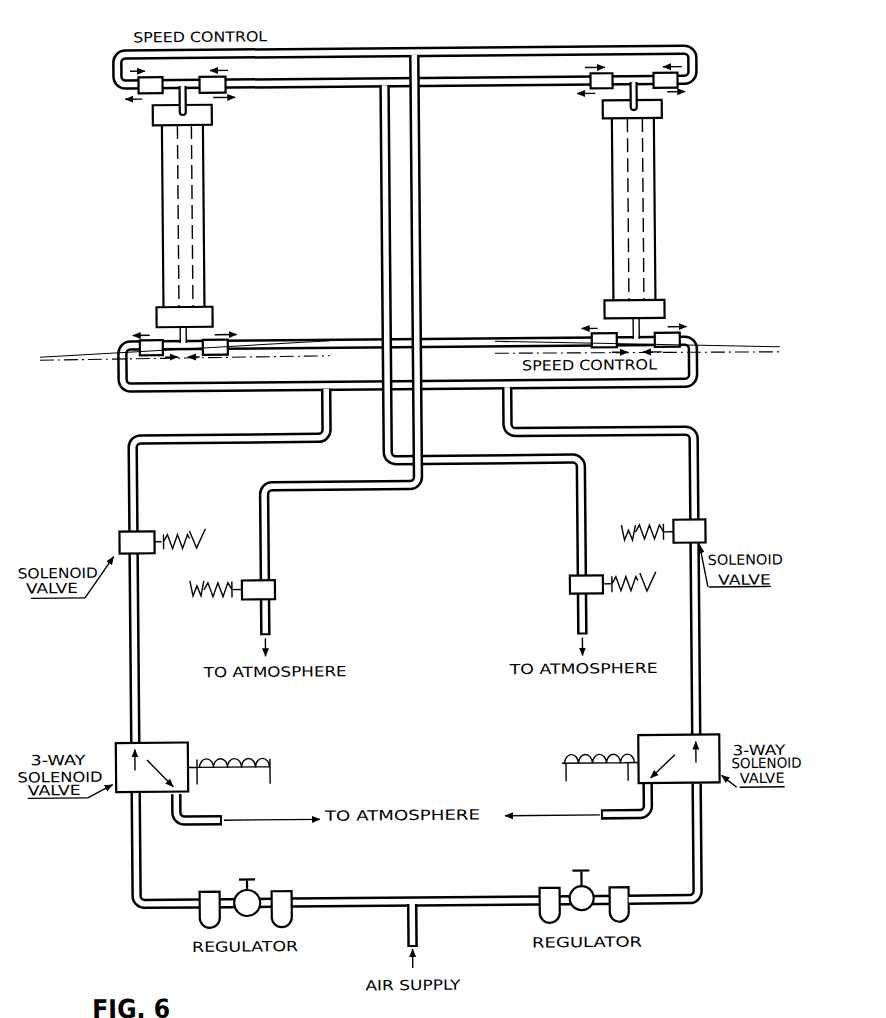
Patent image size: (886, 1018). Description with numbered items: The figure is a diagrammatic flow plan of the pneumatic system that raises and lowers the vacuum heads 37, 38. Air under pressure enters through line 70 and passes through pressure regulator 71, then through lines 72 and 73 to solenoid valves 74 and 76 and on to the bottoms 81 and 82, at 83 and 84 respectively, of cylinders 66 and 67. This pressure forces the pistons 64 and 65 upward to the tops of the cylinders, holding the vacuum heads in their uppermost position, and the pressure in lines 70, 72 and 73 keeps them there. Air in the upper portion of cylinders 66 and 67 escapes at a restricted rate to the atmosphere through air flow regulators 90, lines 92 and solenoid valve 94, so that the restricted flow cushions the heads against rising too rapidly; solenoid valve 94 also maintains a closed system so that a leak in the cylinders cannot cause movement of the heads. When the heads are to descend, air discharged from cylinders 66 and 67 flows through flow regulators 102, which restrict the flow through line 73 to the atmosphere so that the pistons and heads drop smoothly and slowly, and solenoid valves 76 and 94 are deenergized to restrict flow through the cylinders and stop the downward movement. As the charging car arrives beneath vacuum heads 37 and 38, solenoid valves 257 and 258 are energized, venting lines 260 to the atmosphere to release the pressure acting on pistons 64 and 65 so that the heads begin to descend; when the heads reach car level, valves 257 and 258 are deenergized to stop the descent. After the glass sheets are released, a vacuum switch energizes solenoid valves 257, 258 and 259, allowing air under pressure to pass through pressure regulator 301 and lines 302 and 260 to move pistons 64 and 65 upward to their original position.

The line 92 is at (431, 47).
The air flow regulator 90 is at (203, 78).
The cylinder 66 is at (207, 213).
The piston 64 is at (199, 249).
The bottom inlet of cylinder 66 83 is at (177, 315).
The bottom of cylinder 66 81 is at (215, 307).
The flow regulator 102 is at (141, 340).
The vacuum head 37 is at (306, 359).
The line 73 is at (146, 433).
The cylinder 67 is at (658, 212).
The piston 65 is at (645, 254).
The bottom inlet of cylinder 67 84 is at (636, 310).
The bottom of cylinder 67 82 is at (666, 304).
The vacuum head 38 is at (752, 345).
The line 260 is at (612, 428).
The solenoid valve 76 is at (119, 530).
The solenoid valve 94 is at (274, 582).
The solenoid valve 258 is at (569, 580).
The solenoid valve 257 is at (705, 530).
The solenoid valve 74 is at (114, 742).
The solenoid valve 259 is at (717, 743).
The line 72 is at (129, 859).
The pressure regulator 71 is at (250, 886).
The pressure regulator 301 is at (590, 885).
The line 302 is at (701, 854).
The line 70 is at (414, 935).